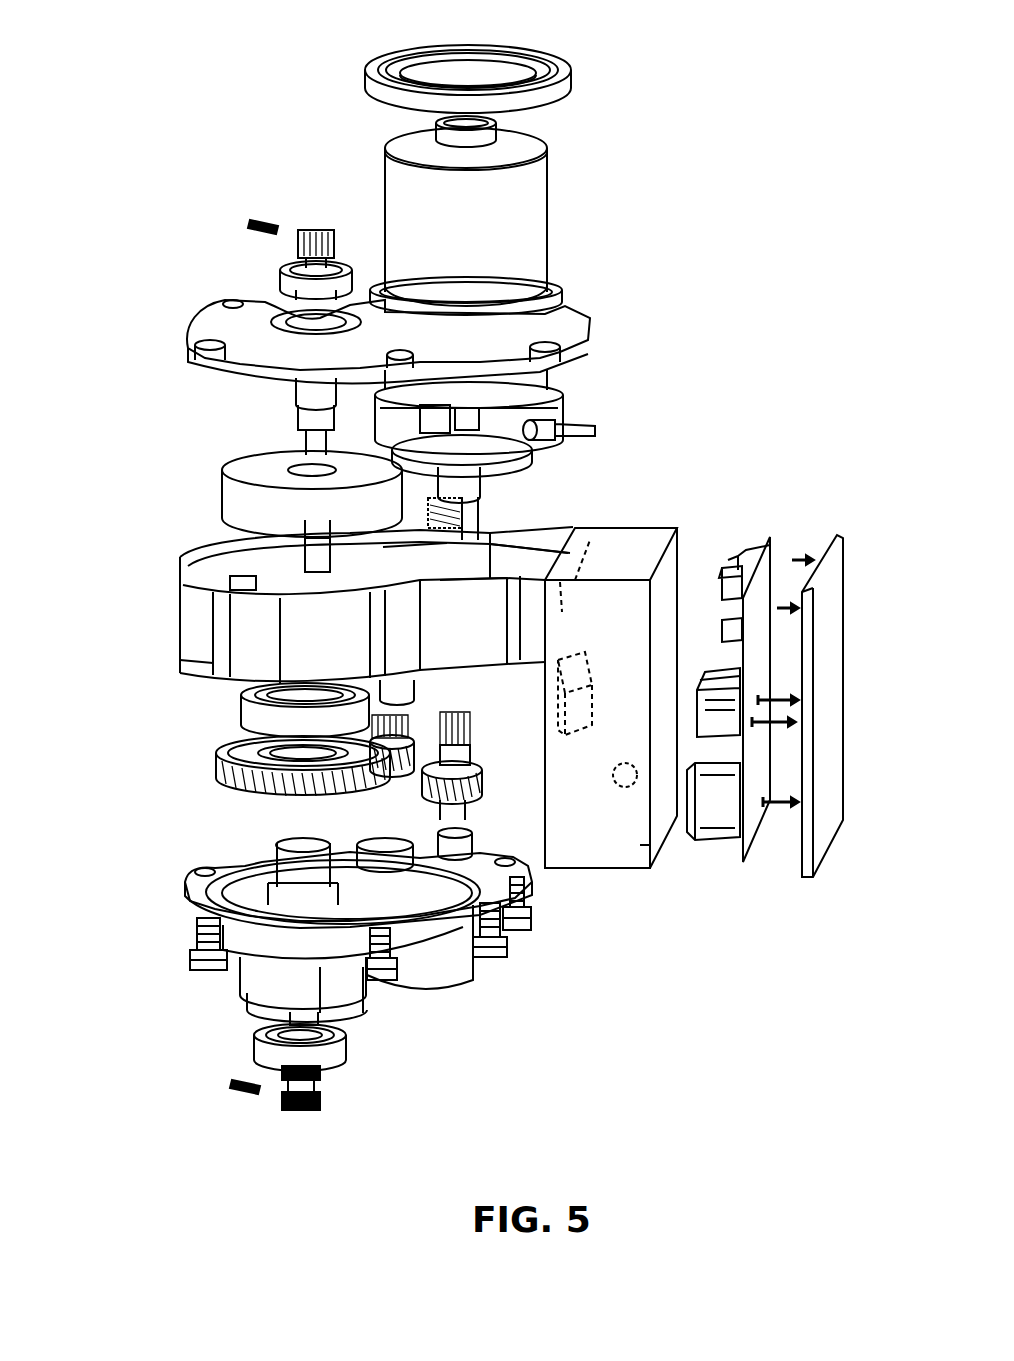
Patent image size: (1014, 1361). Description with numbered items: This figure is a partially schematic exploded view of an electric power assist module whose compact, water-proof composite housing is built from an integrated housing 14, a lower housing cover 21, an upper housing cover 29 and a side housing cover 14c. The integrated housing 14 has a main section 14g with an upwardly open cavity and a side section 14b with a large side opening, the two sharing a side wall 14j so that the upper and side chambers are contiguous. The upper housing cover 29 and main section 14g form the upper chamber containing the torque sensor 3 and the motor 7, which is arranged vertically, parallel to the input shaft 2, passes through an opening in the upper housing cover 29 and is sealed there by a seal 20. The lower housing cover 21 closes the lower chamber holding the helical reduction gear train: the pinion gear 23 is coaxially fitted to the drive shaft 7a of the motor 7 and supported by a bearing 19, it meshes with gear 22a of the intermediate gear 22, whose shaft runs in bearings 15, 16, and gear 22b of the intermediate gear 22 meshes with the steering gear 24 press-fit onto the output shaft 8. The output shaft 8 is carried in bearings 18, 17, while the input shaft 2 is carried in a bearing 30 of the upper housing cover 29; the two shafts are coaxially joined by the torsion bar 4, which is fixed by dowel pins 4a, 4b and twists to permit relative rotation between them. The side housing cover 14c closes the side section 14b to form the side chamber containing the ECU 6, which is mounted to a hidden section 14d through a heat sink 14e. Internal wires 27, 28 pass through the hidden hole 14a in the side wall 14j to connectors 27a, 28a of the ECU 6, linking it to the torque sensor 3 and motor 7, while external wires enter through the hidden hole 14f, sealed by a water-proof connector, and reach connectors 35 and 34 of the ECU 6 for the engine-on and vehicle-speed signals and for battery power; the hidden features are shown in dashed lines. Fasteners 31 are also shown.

The input shaft 2 is at (322, 228).
The torque sensor 3 is at (213, 478).
The torsion bar 4 is at (300, 556).
The dowel pin 4a is at (255, 218).
The dowel pin 4b is at (232, 1068).
The ECU 6 is at (776, 640).
The motor 7 is at (540, 222).
The drive shaft 7a is at (492, 492).
The output shaft 8 is at (322, 1082).
The integrated housing 14 is at (314, 612).
The hole 14a is at (618, 688).
The side section 14b is at (662, 526).
The side housing cover 14c is at (840, 540).
The section 14d is at (575, 740).
The heat sink 14e is at (700, 730).
The hole 14f is at (626, 792).
The main section 14g is at (178, 672).
The side wall 14j is at (395, 554).
The bearing 15 is at (424, 694).
The bearing 16 is at (357, 842).
The bearing 17 is at (350, 1043).
The bearing 18 is at (240, 705).
The bearing 19 is at (474, 838).
The seal 20 is at (572, 72).
The lower housing cover 21 is at (185, 883).
The intermediate gear 22 is at (312, 800).
The gear 22a is at (484, 775).
The gear 22b is at (470, 744).
The pinion gear 23 is at (472, 720).
The steering gear 24 is at (215, 762).
The internal wires 27 is at (455, 512).
The connector 27a is at (757, 550).
The internal wires 28 is at (580, 424).
The connector 28a is at (735, 560).
The upper housing cover 29 is at (200, 333).
The bearing 30 is at (283, 277).
The bolts 31 is at (533, 912).
The connector 34 is at (740, 745).
The connector 35 is at (742, 672).